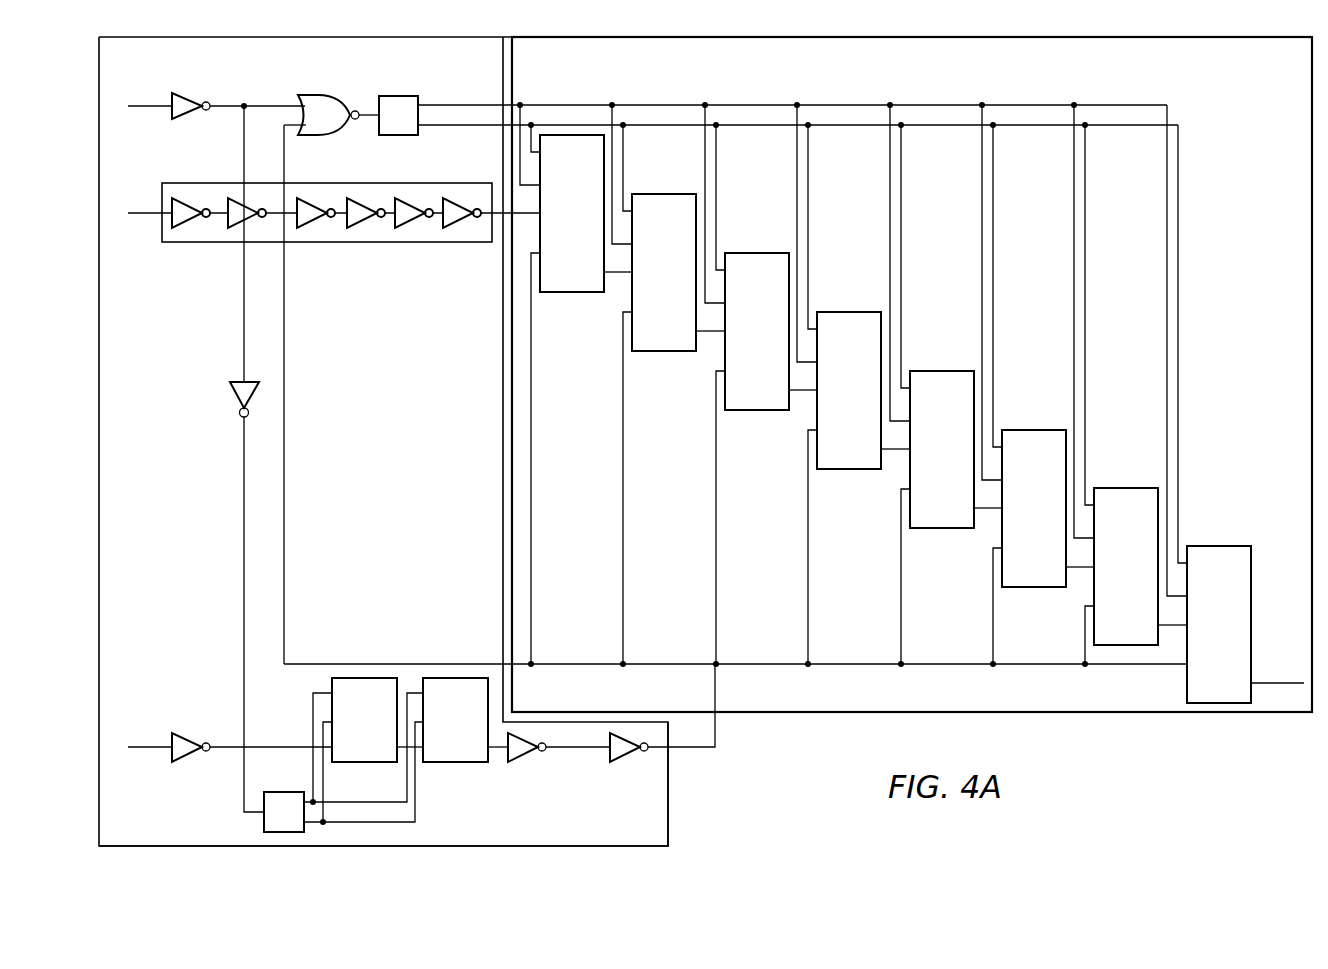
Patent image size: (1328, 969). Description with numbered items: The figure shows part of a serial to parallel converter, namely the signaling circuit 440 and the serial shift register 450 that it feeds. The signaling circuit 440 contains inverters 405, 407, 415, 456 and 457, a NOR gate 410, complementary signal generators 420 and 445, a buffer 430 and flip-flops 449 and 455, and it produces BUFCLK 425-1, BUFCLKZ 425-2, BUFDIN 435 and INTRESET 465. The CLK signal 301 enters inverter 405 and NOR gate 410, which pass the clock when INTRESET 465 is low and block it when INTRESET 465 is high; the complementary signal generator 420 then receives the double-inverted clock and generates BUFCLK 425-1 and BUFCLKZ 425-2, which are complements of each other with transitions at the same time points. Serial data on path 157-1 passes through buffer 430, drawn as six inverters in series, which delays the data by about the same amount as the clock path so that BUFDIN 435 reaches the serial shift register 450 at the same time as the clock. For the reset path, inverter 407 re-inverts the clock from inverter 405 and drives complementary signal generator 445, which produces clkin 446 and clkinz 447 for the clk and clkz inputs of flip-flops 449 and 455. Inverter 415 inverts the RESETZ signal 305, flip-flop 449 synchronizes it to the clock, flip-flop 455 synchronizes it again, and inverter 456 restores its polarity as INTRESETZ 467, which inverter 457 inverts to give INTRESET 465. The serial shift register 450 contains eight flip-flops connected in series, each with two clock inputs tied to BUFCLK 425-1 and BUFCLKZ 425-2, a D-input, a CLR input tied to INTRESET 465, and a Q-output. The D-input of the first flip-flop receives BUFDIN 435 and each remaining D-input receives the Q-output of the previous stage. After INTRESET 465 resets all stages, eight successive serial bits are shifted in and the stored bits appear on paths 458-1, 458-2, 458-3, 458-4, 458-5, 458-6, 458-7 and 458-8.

The CLK signal 301 is at (144, 81).
The RESETZ signal 305 is at (144, 772).
The path carrying serial data 157-1 is at (139, 186).
The inverter 405 is at (194, 85).
The inverter 407 is at (218, 400).
The NOR gate 410 is at (327, 90).
The inverter 415 is at (195, 768).
The complementary signal generator 420 is at (403, 91).
The BUFCLK signal 425-1 is at (792, 82).
The BUFCLKZ signal 425-2 is at (798, 150).
The buffer 430 is at (327, 241).
The BUFDIN signal 435 is at (495, 260).
The signaling circuit 440 is at (418, 784).
The complementary signal generator 445 is at (253, 817).
The clkin signal 446 is at (363, 749).
The clkinz signal 447 is at (391, 779).
The flip-flop 449 is at (333, 715).
The serial shift register 450 is at (912, 404).
The flip-flop 455 is at (455, 743).
The inverter 456 is at (530, 769).
The inverter 457 is at (632, 769).
The path 458-1 is at (574, 384).
The path 458-2 is at (667, 384).
The path 458-3 is at (759, 384).
The path 458-4 is at (852, 384).
The path 458-5 is at (944, 384).
The path 458-6 is at (1036, 384).
The path 458-7 is at (1129, 403).
The path 458-8 is at (1237, 404).
The INTRESET signal 465 is at (735, 706).
The INTRESETZ signal 467 is at (578, 773).